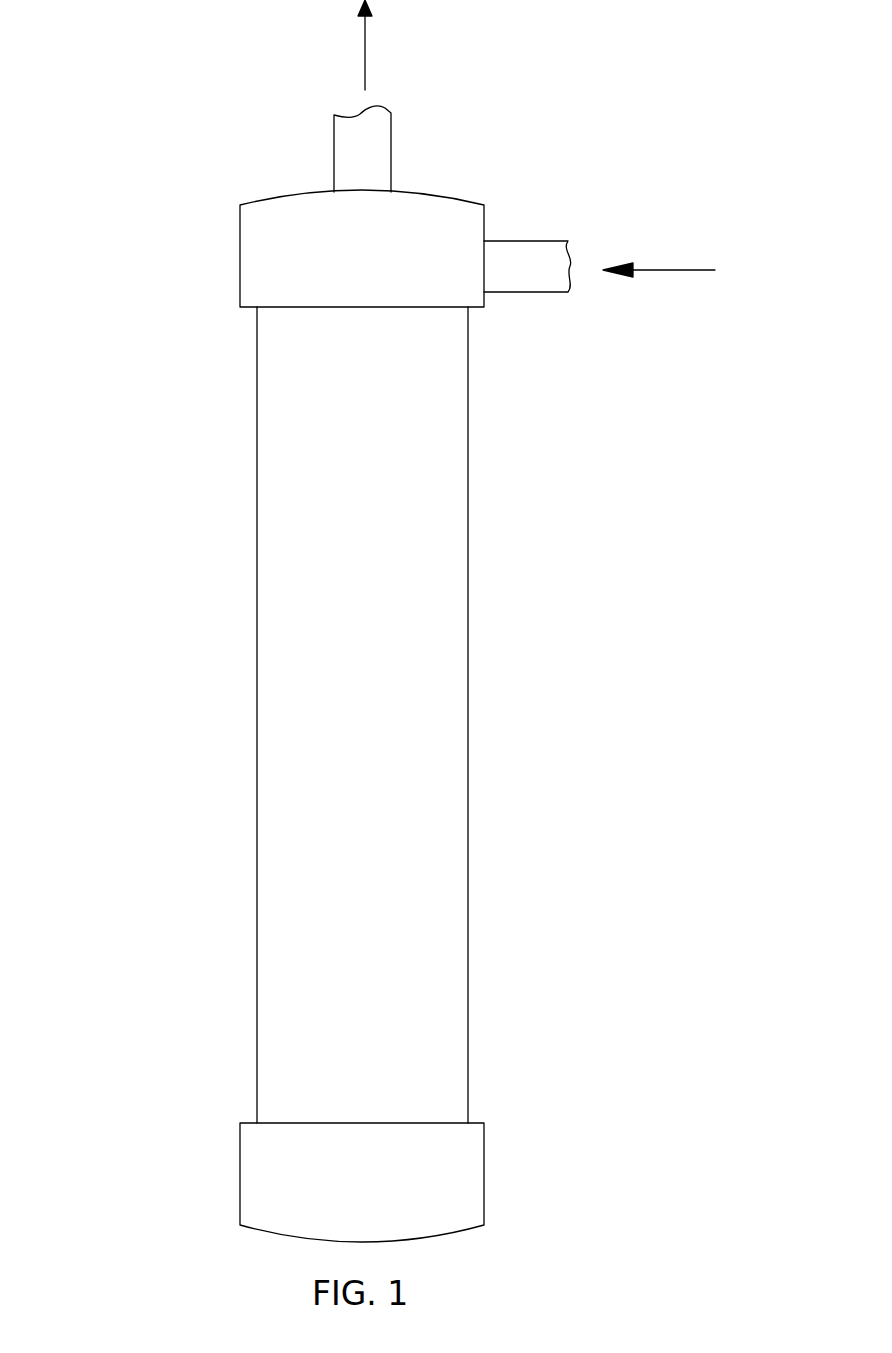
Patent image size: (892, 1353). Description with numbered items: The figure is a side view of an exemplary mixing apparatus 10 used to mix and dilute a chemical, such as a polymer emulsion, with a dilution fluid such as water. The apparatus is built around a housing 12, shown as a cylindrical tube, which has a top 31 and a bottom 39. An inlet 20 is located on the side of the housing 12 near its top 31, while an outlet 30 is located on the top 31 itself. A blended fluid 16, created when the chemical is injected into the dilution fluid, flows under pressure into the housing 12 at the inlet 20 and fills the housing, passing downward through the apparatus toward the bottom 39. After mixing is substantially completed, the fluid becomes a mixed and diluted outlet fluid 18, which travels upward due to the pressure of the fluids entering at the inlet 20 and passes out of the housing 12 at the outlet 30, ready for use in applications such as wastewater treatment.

The mixing apparatus 10 is at (126, 54).
The housing 12 is at (256, 887).
The blended fluid 16 is at (668, 270).
The outlet fluid 18 is at (365, 42).
The inlet 20 is at (537, 294).
The outlet 30 is at (391, 150).
The top 31 is at (267, 250).
The bottom 39 is at (264, 1178).